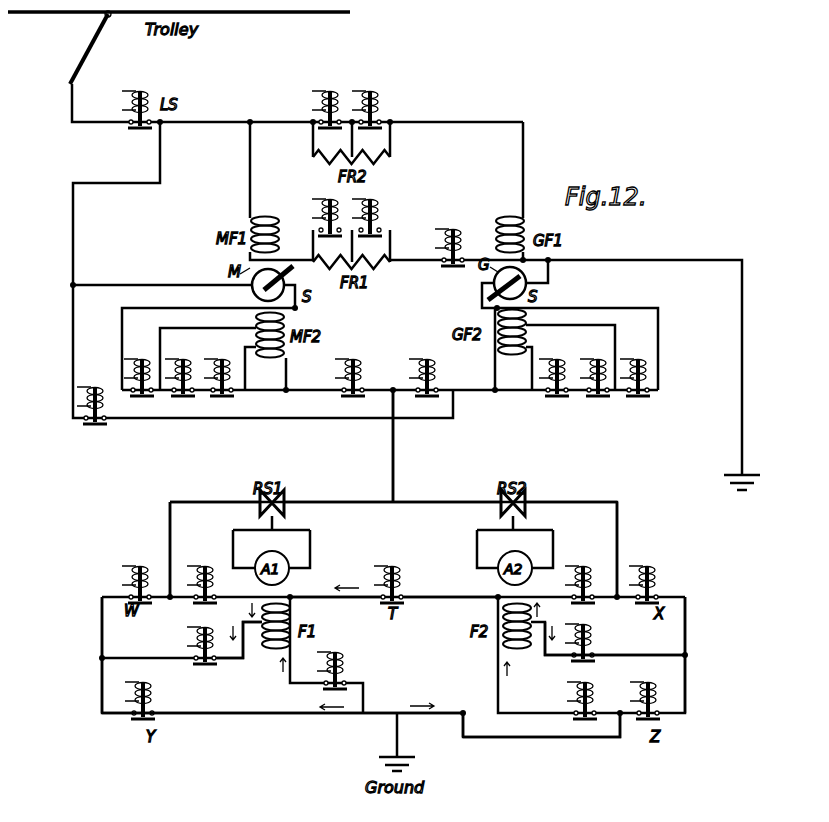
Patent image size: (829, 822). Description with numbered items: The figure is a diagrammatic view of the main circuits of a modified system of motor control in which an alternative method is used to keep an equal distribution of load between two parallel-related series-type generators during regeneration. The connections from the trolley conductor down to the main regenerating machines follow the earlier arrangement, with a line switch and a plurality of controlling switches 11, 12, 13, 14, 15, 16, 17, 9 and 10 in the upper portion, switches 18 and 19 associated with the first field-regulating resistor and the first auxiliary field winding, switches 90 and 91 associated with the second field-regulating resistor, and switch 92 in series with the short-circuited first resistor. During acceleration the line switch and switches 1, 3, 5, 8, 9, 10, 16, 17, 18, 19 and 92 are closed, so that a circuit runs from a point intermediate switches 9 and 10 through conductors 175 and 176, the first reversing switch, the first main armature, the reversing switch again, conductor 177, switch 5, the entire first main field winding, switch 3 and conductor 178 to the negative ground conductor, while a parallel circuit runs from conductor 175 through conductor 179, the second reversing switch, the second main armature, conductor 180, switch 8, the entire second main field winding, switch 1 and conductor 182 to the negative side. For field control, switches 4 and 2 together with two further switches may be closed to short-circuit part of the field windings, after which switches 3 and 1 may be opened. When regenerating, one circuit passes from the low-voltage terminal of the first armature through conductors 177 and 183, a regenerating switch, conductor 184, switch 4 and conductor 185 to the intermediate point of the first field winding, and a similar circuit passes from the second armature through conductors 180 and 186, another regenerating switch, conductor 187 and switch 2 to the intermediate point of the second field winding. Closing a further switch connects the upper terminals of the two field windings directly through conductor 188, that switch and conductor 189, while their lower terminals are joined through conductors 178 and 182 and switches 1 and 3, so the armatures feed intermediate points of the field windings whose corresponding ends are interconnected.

The controlling switch 90 is at (340, 90).
The controlling switch 91 is at (380, 90).
The controlling switch 92 is at (456, 255).
The controlling switch 18 is at (322, 212).
The controlling switch 19 is at (378, 212).
The controlling switch 9 is at (354, 397).
The controlling switch 10 is at (428, 397).
The controlling switch 11 is at (96, 424).
The controlling switch 12 is at (221, 397).
The controlling switch 13 is at (182, 397).
The controlling switch 14 is at (146, 397).
The controlling switch 15 is at (639, 397).
The controlling switch 16 is at (599, 397).
The controlling switch 17 is at (558, 397).
The controlling switch 1 is at (592, 702).
The controlling switch 2 is at (590, 661).
The controlling switch 3 is at (348, 652).
The controlling switch 4 is at (214, 664).
The controlling switch 5 is at (208, 603).
The controlling switch 8 is at (586, 603).
The conductor 175 is at (394, 445).
The conductor 176 is at (370, 498).
The conductor 177 is at (236, 498).
The conductor 178 is at (398, 728).
The conductor 179 is at (472, 498).
The conductor 180 is at (604, 498).
The conductor 182 is at (556, 738).
The conductor 183 is at (170, 599).
The conductor 184 is at (103, 624).
The conductor 185 is at (238, 661).
The conductor 186 is at (615, 643).
The conductor 187 is at (686, 648).
The conductor 188 is at (372, 598).
The conductor 189 is at (466, 598).